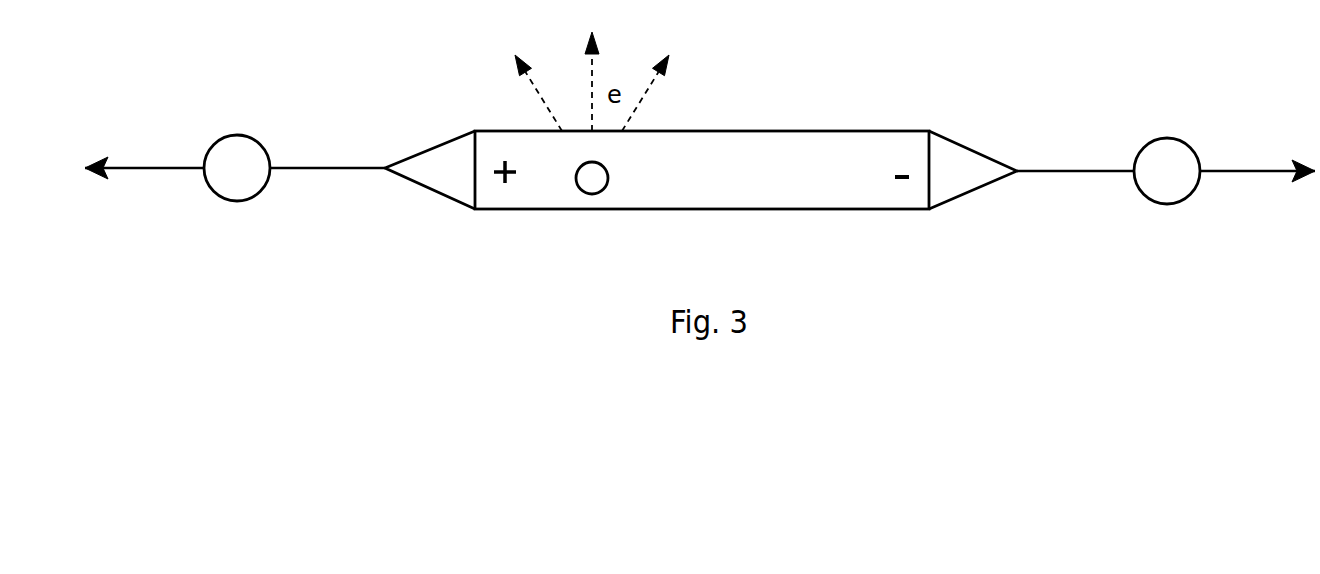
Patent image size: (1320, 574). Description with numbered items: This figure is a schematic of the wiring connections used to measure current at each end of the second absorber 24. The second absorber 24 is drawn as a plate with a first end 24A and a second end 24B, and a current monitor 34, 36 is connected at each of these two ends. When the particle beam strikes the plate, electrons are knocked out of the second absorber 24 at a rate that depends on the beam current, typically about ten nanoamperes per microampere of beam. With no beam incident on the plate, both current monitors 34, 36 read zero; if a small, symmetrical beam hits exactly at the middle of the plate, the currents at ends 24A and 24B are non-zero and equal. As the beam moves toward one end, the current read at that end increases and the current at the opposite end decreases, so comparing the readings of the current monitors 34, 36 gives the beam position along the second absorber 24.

The second absorber 24 is at (825, 131).
The first end of second absorber 24A is at (475, 170).
The second end of second absorber 24B is at (930, 170).
The current monitor 34 is at (248, 137).
The current monitor 36 is at (1173, 139).